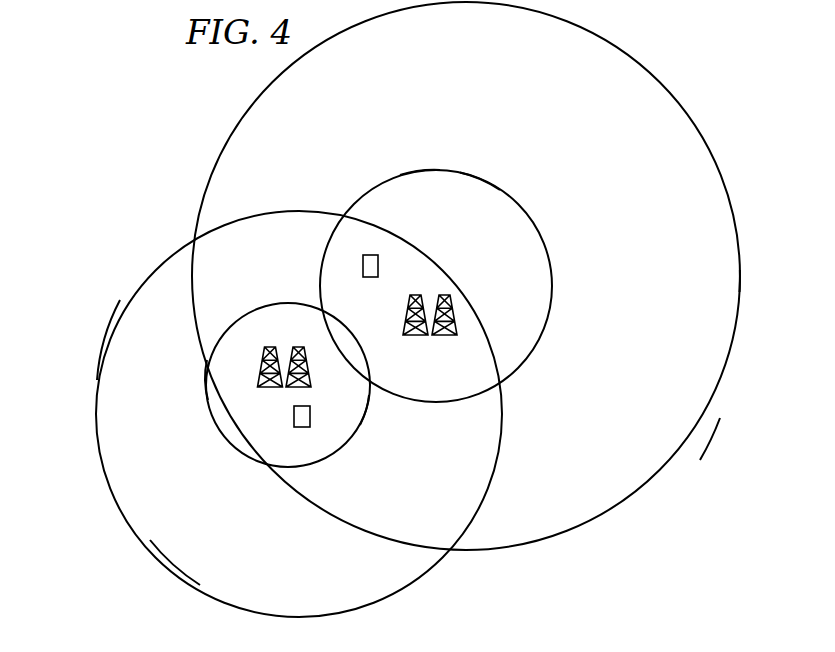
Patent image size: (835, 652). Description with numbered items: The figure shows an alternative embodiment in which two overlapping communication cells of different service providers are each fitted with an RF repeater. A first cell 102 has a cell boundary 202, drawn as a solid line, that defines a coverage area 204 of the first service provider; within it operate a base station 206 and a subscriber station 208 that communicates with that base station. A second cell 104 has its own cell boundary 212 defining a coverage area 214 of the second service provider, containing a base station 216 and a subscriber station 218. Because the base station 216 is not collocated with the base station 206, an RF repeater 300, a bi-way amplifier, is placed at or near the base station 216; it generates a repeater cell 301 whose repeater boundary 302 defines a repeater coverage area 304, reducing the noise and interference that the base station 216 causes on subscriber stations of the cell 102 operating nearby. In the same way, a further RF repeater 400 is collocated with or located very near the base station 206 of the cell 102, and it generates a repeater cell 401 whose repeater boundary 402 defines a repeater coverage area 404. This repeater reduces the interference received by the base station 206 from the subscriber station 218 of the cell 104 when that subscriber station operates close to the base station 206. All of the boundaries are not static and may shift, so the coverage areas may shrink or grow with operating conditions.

The first cell 102 is at (110, 314).
The second cell 104 is at (682, 90).
The cell boundary 202 is at (97, 432).
The coverage area 204 is at (188, 562).
The base station 206 is at (262, 367).
The subscriber station 208 is at (362, 262).
The cell boundary 212 is at (740, 268).
The coverage area 214 is at (683, 407).
The base station 216 is at (455, 325).
The subscriber station 218 is at (305, 427).
The RF repeater 300 is at (420, 335).
The repeater cell 301 is at (513, 191).
The repeater boundary 302 is at (478, 174).
The repeater coverage area 304 is at (437, 182).
The RF repeater 400 is at (292, 345).
The repeater cell 401 is at (352, 440).
The repeater boundary 402 is at (367, 408).
The repeater coverage area 404 is at (223, 375).